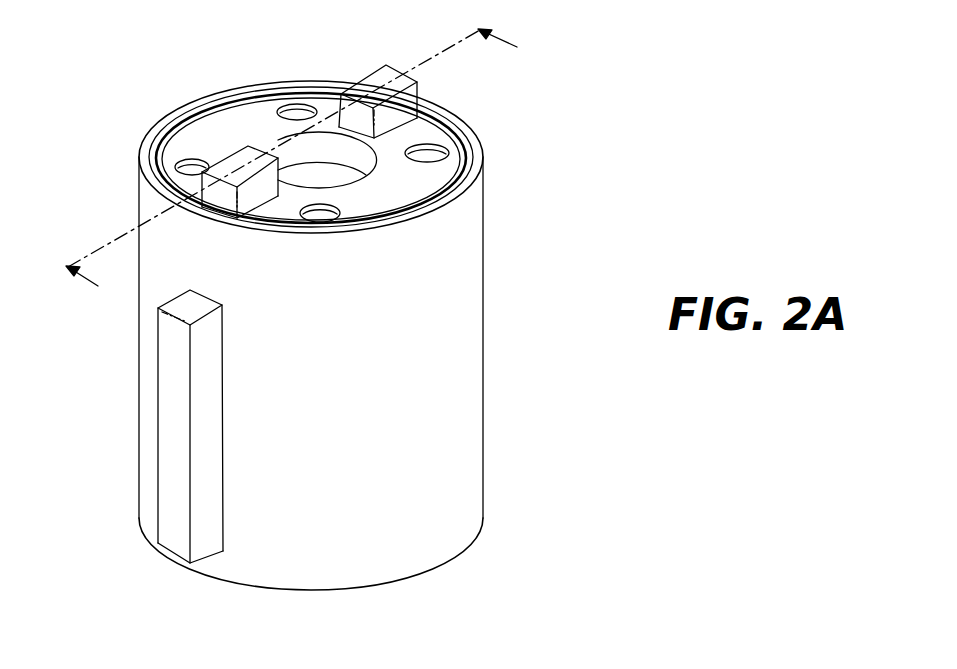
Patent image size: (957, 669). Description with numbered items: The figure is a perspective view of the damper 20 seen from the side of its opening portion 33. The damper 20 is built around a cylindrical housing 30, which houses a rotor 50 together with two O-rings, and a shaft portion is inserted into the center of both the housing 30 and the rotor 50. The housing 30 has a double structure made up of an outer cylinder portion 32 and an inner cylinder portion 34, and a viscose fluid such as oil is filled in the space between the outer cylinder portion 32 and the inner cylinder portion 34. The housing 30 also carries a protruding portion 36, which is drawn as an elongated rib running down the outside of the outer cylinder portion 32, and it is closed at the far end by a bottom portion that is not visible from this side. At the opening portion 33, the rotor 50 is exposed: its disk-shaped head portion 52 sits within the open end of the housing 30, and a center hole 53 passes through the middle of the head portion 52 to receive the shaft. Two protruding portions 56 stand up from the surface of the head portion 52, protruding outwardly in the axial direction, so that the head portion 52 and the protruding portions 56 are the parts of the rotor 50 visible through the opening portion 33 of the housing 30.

The damper 20 is at (291, 648).
The housing 30 is at (468, 438).
The outer cylinder portion 32 is at (445, 363).
The opening portion 33 is at (483, 168).
The inner cylinder portion 34 is at (295, 172).
The protruding portion 36 is at (197, 458).
The rotor 50 is at (417, 182).
The head portion 52 is at (385, 148).
The center hole 53 is at (312, 142).
The protruding portions 56 is at (236, 157).